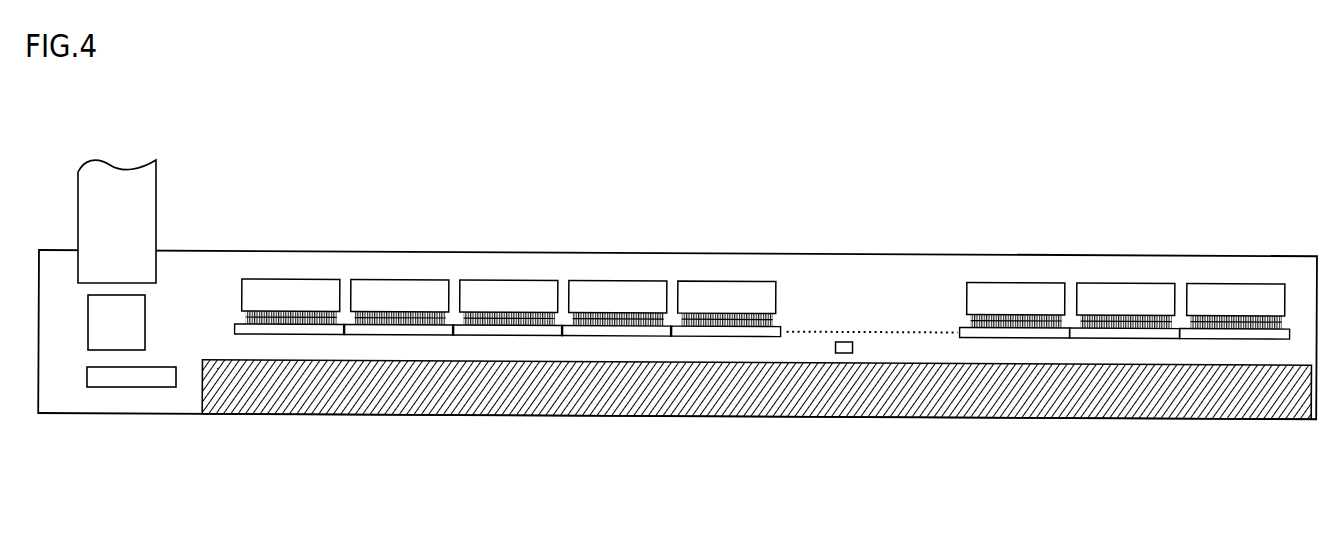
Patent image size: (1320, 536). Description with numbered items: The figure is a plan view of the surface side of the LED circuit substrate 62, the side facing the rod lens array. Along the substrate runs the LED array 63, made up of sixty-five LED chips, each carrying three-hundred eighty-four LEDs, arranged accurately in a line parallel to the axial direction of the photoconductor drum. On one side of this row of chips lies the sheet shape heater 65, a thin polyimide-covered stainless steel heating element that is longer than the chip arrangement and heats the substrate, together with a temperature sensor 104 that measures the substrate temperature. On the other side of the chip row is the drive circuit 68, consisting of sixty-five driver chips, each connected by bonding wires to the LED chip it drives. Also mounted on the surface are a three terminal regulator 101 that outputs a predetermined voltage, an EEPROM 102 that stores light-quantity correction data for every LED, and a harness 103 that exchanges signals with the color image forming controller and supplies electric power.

The LED circuit substrate 62 is at (716, 101).
The LED array 63 is at (779, 321).
The sheet shape heater 65 is at (645, 388).
The drive circuit 68 is at (711, 276).
The three terminal regulator 101 is at (146, 315).
The EEPROM 102 is at (137, 388).
The harness 103 is at (157, 197).
The temperature sensor 104 is at (847, 340).